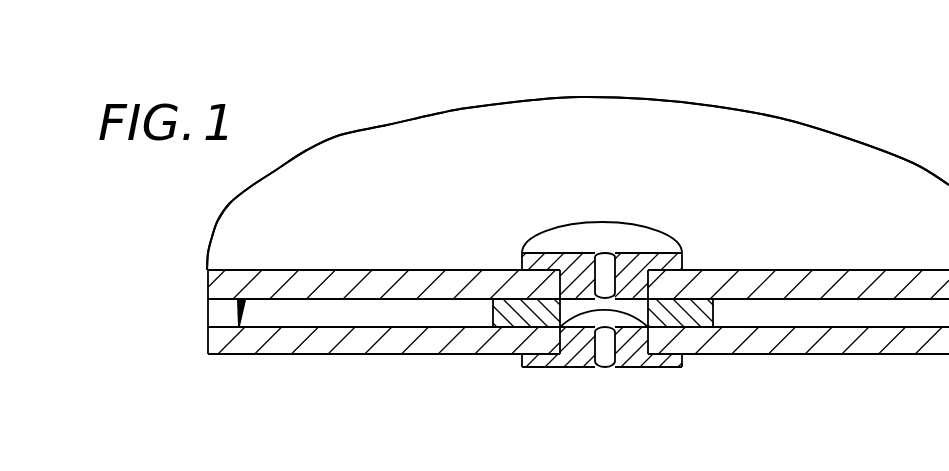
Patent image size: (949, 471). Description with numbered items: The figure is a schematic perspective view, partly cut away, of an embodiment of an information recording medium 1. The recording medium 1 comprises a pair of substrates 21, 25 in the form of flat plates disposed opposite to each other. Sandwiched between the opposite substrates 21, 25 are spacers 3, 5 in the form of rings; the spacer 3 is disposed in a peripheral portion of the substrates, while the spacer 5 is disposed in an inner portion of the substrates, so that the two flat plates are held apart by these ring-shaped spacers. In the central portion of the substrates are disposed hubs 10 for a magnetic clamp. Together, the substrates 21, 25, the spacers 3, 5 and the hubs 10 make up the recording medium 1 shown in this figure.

The recording medium 1 is at (650, 92).
The spacer 3 is at (199, 312).
The spacer 5 is at (518, 328).
The hub 10 is at (643, 240).
The substrate 21 is at (385, 147).
The substrate 25 is at (388, 340).